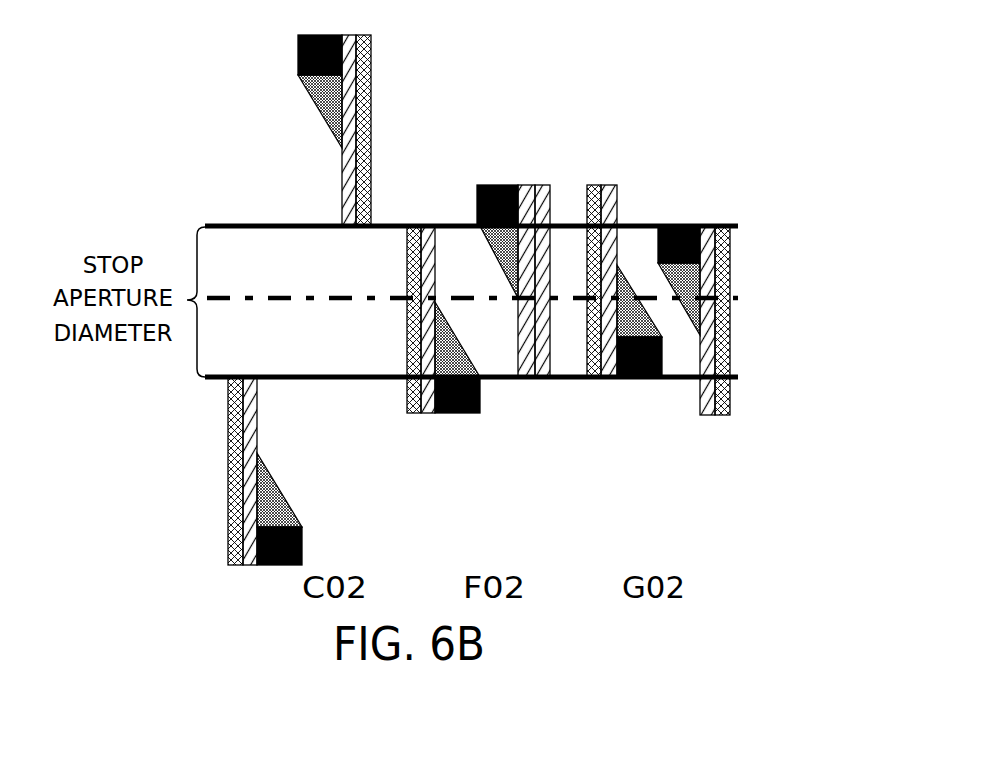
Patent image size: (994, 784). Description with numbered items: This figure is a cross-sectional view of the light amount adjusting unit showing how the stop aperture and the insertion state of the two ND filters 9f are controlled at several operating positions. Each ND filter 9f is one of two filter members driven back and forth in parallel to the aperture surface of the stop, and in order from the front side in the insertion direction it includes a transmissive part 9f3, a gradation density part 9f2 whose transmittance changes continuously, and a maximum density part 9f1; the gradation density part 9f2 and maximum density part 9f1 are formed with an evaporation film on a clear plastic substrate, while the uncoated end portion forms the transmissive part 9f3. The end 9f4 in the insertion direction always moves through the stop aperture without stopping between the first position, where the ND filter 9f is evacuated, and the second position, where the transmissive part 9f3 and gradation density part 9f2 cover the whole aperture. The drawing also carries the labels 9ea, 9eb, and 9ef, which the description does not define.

The first lens surface of lens element 9e 9ea is at (373, 89).
The lens element portion 9e 9ef is at (295, 37).
The second lens surface of lens element 9e 9eb is at (218, 462).
The ND filter 9f is at (205, 380).
The maximum density part 9f1 is at (315, 540).
The gradation density part 9f2 is at (301, 488).
The transmissive part 9f3 is at (270, 408).
The end of ND filter 9f4 is at (252, 361).